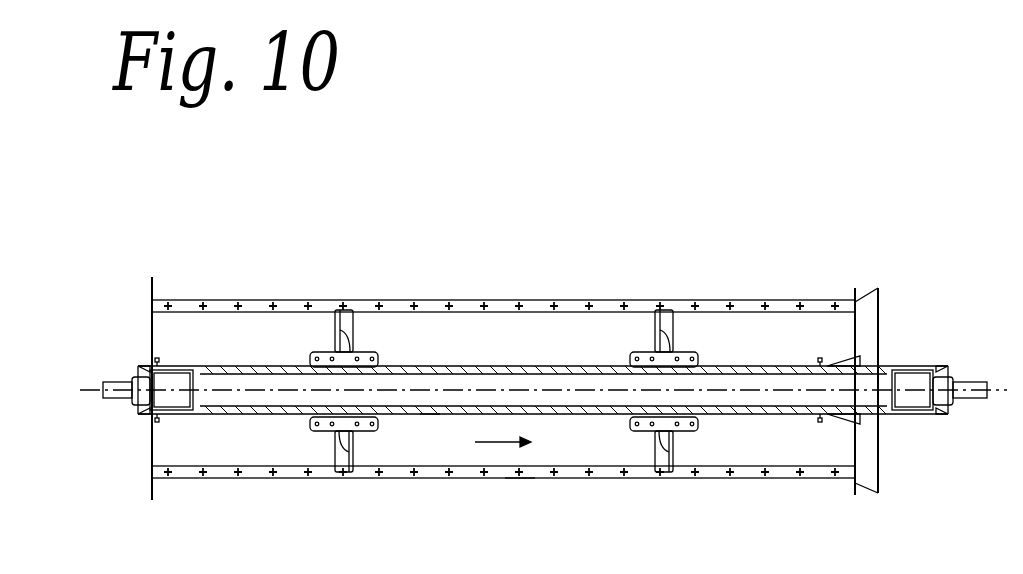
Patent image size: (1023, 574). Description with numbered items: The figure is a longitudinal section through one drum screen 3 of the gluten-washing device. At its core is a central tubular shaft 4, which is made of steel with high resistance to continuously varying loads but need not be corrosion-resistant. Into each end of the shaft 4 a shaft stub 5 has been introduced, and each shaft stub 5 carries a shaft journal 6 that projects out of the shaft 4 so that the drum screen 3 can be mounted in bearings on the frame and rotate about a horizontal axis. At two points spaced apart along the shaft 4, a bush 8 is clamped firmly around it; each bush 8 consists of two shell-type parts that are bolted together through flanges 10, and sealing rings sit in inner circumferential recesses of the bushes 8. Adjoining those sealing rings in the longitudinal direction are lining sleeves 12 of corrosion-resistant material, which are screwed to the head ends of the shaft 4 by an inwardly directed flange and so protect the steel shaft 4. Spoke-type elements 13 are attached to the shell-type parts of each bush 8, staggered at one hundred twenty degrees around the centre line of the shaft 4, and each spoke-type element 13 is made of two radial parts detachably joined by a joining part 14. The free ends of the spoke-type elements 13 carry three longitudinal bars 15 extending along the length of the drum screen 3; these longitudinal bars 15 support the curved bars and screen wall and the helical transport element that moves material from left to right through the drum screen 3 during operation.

The drum screen 3 is at (565, 300).
The central tubular shaft 4 is at (452, 366).
The shaft stub 5 is at (180, 388).
The shaft journal 6 is at (117, 383).
The bush 8 is at (683, 357).
The flange 10 is at (322, 417).
The lining sleeve 12 is at (428, 415).
The spoke-type element 13 is at (343, 310).
The joining part 14 is at (348, 343).
The longitudinal bar 15 is at (520, 480).